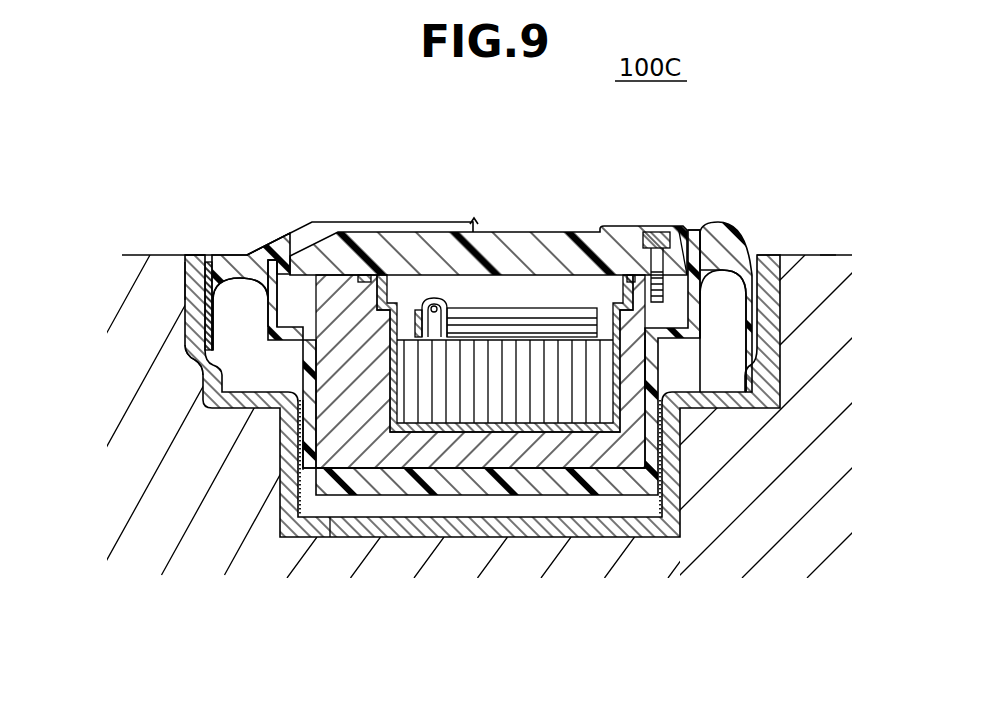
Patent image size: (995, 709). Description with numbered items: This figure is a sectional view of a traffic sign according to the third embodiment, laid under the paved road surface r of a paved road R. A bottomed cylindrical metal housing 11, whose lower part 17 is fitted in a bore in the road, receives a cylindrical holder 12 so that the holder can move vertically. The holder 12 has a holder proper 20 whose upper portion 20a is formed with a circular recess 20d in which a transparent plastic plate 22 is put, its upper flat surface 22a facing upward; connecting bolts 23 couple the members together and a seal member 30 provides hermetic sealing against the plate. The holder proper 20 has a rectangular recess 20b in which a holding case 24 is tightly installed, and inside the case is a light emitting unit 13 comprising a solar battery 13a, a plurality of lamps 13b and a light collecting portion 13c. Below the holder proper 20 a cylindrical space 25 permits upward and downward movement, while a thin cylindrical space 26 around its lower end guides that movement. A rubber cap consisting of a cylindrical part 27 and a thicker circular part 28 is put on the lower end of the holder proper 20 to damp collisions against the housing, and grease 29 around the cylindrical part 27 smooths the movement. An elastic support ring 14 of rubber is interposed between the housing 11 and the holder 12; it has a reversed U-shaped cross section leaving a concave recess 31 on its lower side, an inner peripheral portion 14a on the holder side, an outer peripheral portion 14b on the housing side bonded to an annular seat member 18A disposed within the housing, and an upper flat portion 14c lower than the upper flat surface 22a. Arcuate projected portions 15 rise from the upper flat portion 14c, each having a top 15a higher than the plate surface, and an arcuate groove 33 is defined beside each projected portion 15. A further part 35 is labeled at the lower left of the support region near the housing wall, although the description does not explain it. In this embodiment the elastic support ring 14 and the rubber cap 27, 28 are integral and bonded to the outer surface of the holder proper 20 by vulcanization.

The housing 11 is at (683, 433).
The holder 12 is at (660, 365).
The light emitting unit 13 is at (552, 310).
The solar battery 13a is at (491, 408).
The lamps 13b is at (434, 298).
The light collecting portion 13c is at (540, 330).
The elastic support ring 14 is at (203, 254).
The inner peripheral portion 14a is at (252, 280).
The outer peripheral portion 14b is at (208, 312).
The upper flat portion 14c is at (234, 270).
The arcuate projected portions 15 is at (284, 256).
The top 15a is at (391, 222).
The lower part 17 is at (673, 470).
The annular seat member 18A is at (192, 257).
The holder proper 20 is at (588, 458).
The upper portion 20a is at (317, 290).
The rectangular recess 20b is at (312, 472).
The circular recess 20d is at (692, 233).
The transparent plastic plate 22 is at (476, 230).
The upper flat surface 22a is at (527, 304).
The connecting bolts 23 is at (647, 234).
The holding case 24 is at (455, 442).
The cylindrical space 25 is at (372, 522).
The thin cylindrical space 26 is at (654, 500).
The cylindrical part 27 is at (302, 428).
The circular part 28 is at (548, 470).
The grease 29 is at (299, 460).
The seal member 30 is at (363, 274).
The concave recess 31 is at (198, 292).
The arcuate groove 33 is at (693, 240).
The housing step 35 is at (200, 358).
The paved road R is at (850, 254).
The paved road surface r is at (828, 254).